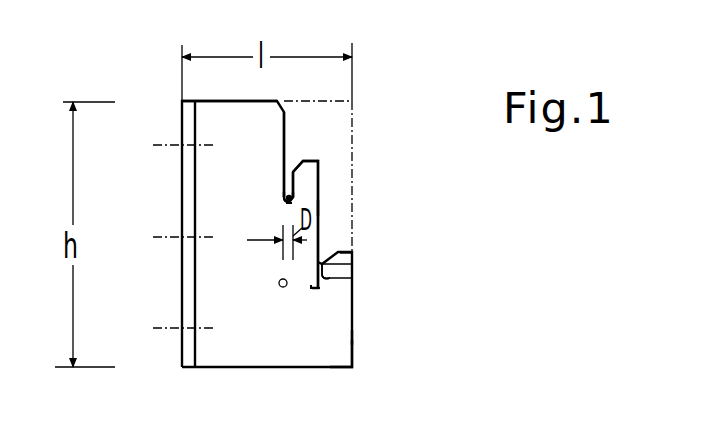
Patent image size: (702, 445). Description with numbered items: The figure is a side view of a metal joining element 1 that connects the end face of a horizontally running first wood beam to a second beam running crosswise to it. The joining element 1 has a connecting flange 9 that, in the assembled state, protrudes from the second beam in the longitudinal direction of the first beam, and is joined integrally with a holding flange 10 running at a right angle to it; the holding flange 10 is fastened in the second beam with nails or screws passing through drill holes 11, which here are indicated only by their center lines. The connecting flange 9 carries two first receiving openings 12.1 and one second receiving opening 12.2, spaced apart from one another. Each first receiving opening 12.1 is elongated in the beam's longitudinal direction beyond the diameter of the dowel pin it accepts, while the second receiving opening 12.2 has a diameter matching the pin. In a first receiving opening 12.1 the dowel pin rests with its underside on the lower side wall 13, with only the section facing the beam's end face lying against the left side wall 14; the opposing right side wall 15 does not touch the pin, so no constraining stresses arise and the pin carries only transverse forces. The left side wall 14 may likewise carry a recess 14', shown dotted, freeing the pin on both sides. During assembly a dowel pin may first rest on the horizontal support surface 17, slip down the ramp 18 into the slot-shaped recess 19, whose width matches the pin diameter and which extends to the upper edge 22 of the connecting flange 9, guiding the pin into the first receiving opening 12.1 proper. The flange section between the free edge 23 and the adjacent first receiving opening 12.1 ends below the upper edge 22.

The joining element 1 is at (355, 148).
The connecting flange 9 is at (244, 352).
The holding flange 10 is at (188, 115).
The drill holes 11 is at (157, 146).
The first receiving openings 12.1 is at (290, 202).
The second receiving opening 12.2 is at (278, 283).
The lower side wall 13 is at (318, 208).
The side wall 14 is at (294, 354).
The recess 14' is at (260, 264).
The right side wall 15 is at (322, 289).
The horizontal support surface 17 is at (312, 161).
The ramp 18 is at (298, 178).
The slot-shaped recess 19 is at (289, 188).
The upper edge 22 is at (227, 100).
The free edge 23 is at (353, 353).